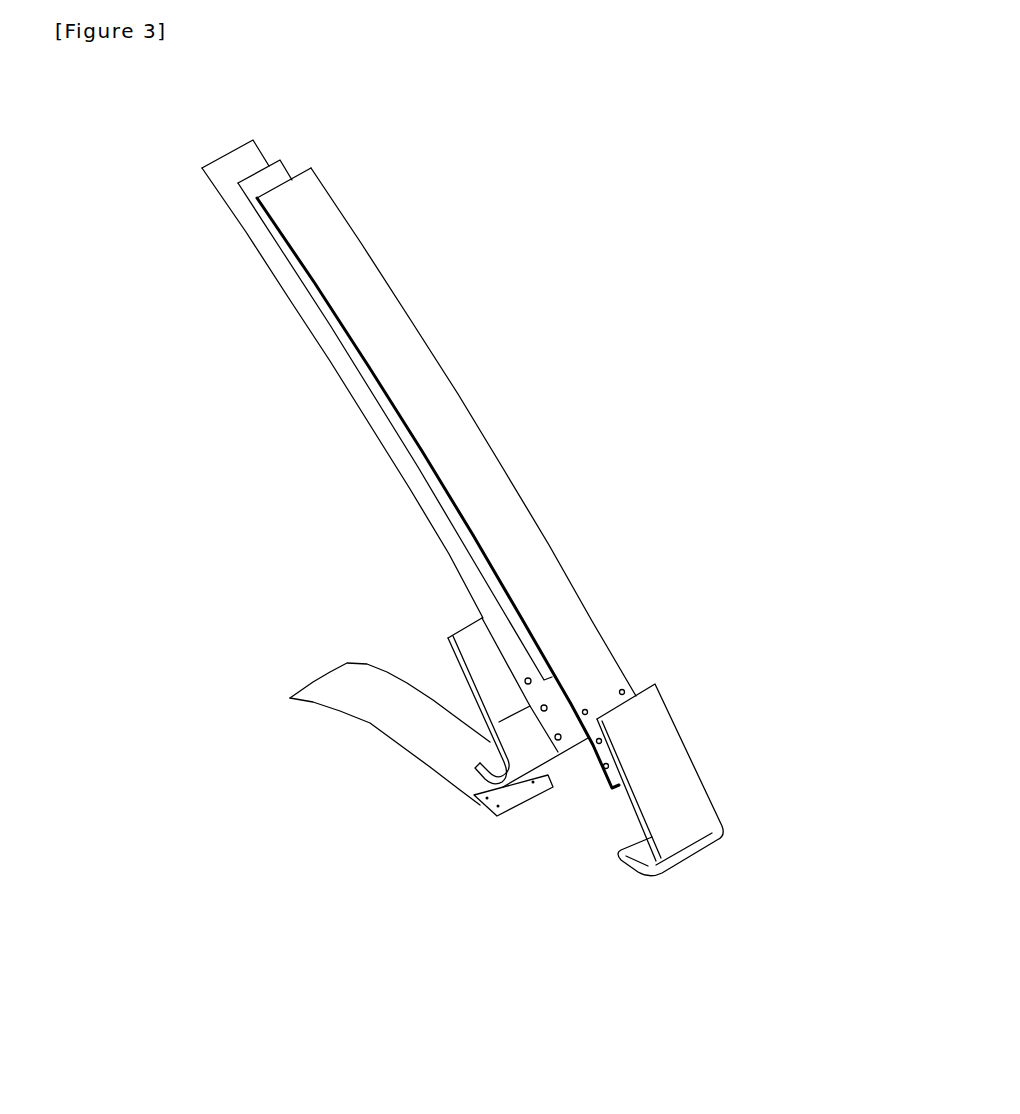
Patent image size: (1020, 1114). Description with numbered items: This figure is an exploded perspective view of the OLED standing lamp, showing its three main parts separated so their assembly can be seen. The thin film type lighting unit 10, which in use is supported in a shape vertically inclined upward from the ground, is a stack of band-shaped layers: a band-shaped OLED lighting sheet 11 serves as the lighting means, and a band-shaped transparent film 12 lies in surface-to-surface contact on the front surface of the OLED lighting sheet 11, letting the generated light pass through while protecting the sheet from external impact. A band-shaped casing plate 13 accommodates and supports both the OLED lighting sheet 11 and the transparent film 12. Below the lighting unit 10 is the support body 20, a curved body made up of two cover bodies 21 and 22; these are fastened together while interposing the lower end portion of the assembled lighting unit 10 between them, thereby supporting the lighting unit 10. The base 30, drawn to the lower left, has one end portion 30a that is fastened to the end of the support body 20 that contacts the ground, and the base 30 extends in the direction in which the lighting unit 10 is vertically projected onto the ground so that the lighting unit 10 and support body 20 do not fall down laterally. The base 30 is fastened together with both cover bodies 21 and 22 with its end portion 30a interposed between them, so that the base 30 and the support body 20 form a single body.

The lighting unit 10 is at (406, 464).
The OLED lighting sheet 11 is at (360, 383).
The transparent film 12 is at (317, 338).
The casing plate 13 is at (313, 295).
The support body 20 is at (656, 747).
The cover body 21 is at (679, 791).
The cover body 22 is at (507, 687).
The base 30 is at (426, 809).
The one end portion 30a is at (515, 810).